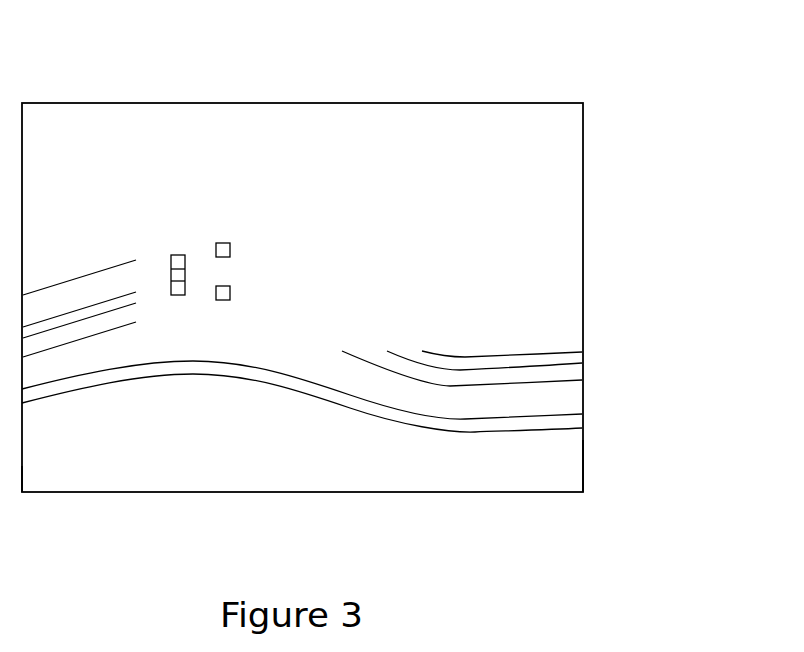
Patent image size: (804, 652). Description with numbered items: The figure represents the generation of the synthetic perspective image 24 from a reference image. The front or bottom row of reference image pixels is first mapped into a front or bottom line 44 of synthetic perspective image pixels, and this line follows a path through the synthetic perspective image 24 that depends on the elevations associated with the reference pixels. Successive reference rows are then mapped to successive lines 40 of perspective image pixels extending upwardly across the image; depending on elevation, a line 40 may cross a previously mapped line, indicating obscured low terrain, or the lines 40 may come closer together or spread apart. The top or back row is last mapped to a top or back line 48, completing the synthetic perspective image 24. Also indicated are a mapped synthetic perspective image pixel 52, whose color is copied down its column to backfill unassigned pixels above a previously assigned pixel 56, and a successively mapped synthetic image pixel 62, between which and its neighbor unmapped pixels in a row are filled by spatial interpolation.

The synthetic perspective image 24 is at (415, 96).
The successive lines of synthetic perspective image pixels 40 is at (617, 421).
The front line or bottom line of synthetic perspective image pixels 44 is at (589, 466).
The top or back line of synthetic perspective image pixels 48 is at (590, 358).
The mapped synthetic perspective image pixel 52 is at (222, 244).
The previously assigned perspective image pixel 56 is at (228, 298).
The successively mapped synthetic image pixel 62 is at (177, 255).